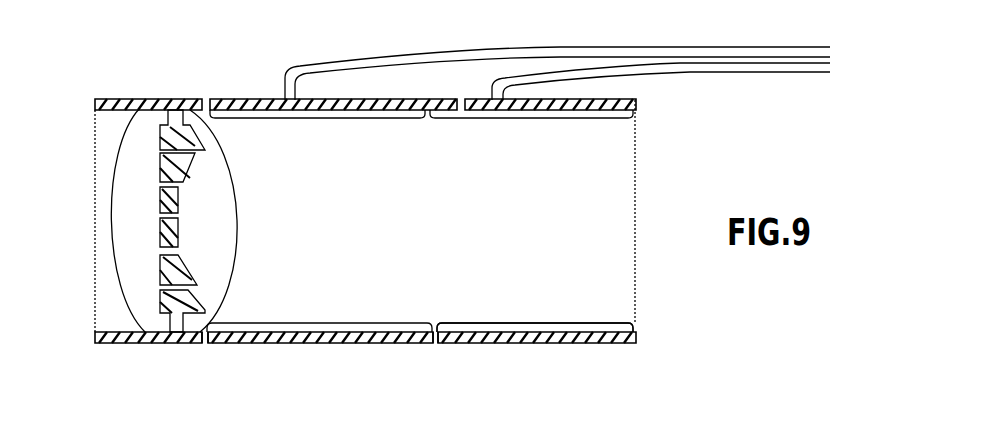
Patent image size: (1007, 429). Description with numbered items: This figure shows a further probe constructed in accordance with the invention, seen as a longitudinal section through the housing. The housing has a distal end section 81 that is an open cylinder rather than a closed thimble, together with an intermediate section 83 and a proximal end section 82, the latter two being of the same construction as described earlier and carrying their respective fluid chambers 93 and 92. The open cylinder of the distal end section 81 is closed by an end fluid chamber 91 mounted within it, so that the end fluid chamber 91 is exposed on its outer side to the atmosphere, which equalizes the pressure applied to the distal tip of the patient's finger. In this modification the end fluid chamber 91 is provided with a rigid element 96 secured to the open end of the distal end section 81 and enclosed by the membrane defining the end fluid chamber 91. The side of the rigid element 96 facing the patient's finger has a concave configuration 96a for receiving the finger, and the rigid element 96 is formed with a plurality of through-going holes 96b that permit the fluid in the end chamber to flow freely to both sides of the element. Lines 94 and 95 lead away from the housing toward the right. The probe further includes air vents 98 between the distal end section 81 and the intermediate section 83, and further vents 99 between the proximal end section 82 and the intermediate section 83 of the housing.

The distal end section 81 is at (142, 343).
The proximal end section 82 is at (538, 343).
The intermediate section 83 is at (318, 343).
The end fluid chamber 91 is at (145, 128).
The fluid chamber 92 is at (520, 323).
The fluid chamber 93 is at (370, 323).
The conduit 94 is at (333, 55).
The conduit 95 is at (692, 73).
The rigid element 96 is at (177, 250).
The concave configuration 96a is at (187, 268).
The through-going holes 96b is at (160, 150).
The air vents 98 is at (200, 343).
The vents 99 is at (433, 343).